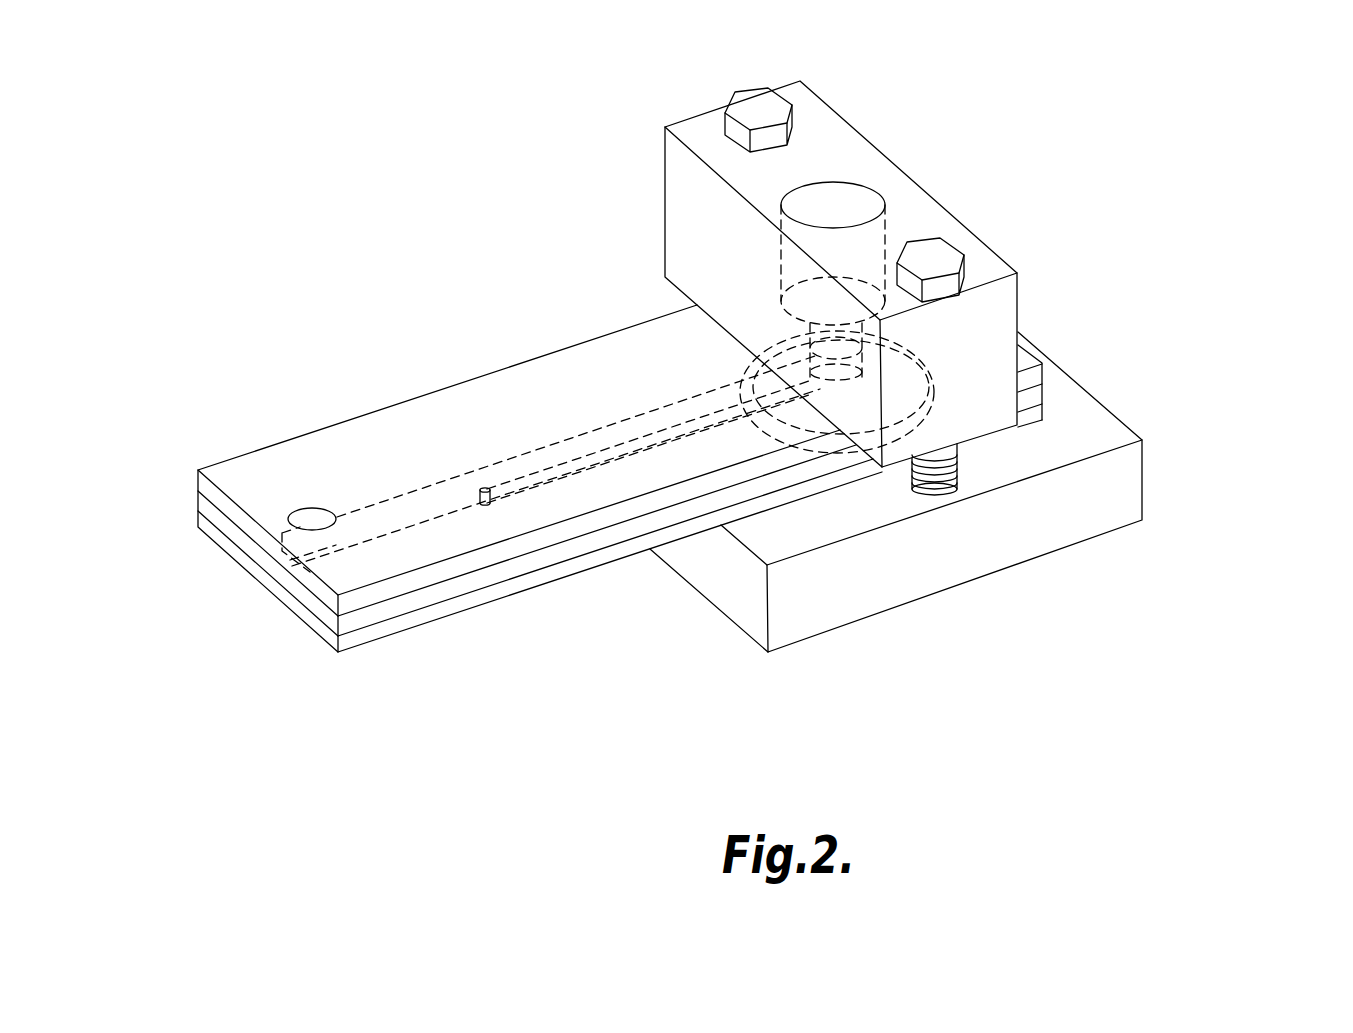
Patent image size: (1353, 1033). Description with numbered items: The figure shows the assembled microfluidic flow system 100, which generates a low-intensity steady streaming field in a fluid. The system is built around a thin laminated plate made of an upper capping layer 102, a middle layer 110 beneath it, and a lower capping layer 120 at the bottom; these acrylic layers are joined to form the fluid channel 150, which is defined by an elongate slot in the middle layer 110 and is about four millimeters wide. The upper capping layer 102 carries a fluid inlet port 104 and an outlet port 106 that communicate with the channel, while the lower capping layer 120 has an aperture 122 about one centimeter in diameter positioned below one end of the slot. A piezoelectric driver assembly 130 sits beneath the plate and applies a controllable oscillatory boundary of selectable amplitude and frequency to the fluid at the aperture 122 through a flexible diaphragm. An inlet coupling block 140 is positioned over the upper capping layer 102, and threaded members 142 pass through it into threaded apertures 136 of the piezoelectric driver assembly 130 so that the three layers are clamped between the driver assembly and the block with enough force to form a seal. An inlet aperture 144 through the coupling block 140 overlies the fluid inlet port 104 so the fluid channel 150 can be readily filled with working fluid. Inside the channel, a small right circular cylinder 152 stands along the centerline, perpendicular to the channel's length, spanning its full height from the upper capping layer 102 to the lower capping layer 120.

The microfluidic flow system 100 is at (1213, 298).
The upper capping layer 102 is at (225, 473).
The fluid inlet port 104 is at (800, 333).
The outlet port 106 is at (310, 513).
The middle layer 110 is at (205, 505).
The lower capping layer 120 is at (223, 537).
The aperture 122 is at (797, 358).
The piezoelectric driver assembly 130 is at (1105, 430).
The threaded apertures 136 is at (933, 494).
The inlet coupling block 140 is at (1003, 310).
The threaded members 142 is at (755, 93).
The inlet aperture 144 is at (845, 187).
The fluid channel 150 is at (523, 458).
The right circular cylinder 152 is at (485, 489).